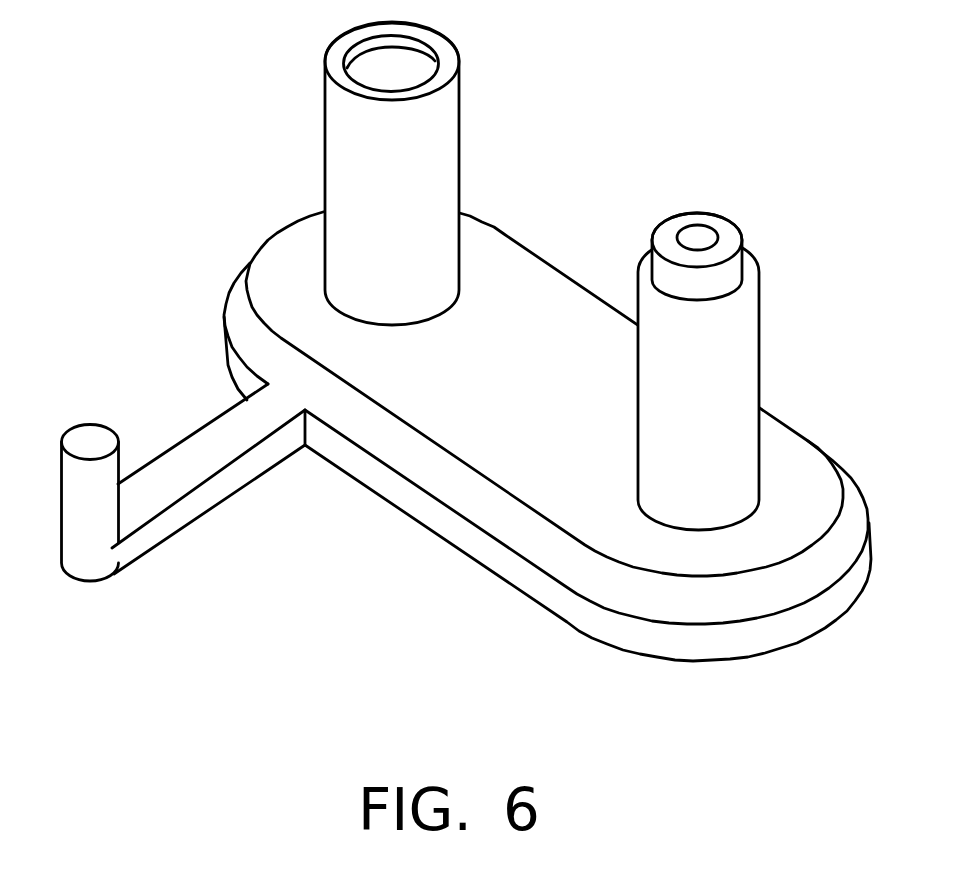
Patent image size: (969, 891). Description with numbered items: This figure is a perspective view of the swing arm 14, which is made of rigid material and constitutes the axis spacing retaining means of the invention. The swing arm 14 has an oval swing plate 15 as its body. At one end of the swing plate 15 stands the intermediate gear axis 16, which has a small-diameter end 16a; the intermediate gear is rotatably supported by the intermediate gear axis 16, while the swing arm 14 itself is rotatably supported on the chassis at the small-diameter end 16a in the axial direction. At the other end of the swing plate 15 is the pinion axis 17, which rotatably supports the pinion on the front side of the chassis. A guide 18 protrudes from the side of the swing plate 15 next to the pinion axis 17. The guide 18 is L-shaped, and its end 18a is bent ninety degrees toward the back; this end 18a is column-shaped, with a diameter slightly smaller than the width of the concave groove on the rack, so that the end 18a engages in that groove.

The swing arm 14 is at (445, 341).
The oval swing plate 15 is at (487, 452).
The intermediate gear axis 16 is at (752, 337).
The small-diameter end 16a is at (698, 240).
The pinion axis 17 is at (348, 132).
The guide 18 is at (162, 465).
The end 18a is at (86, 443).